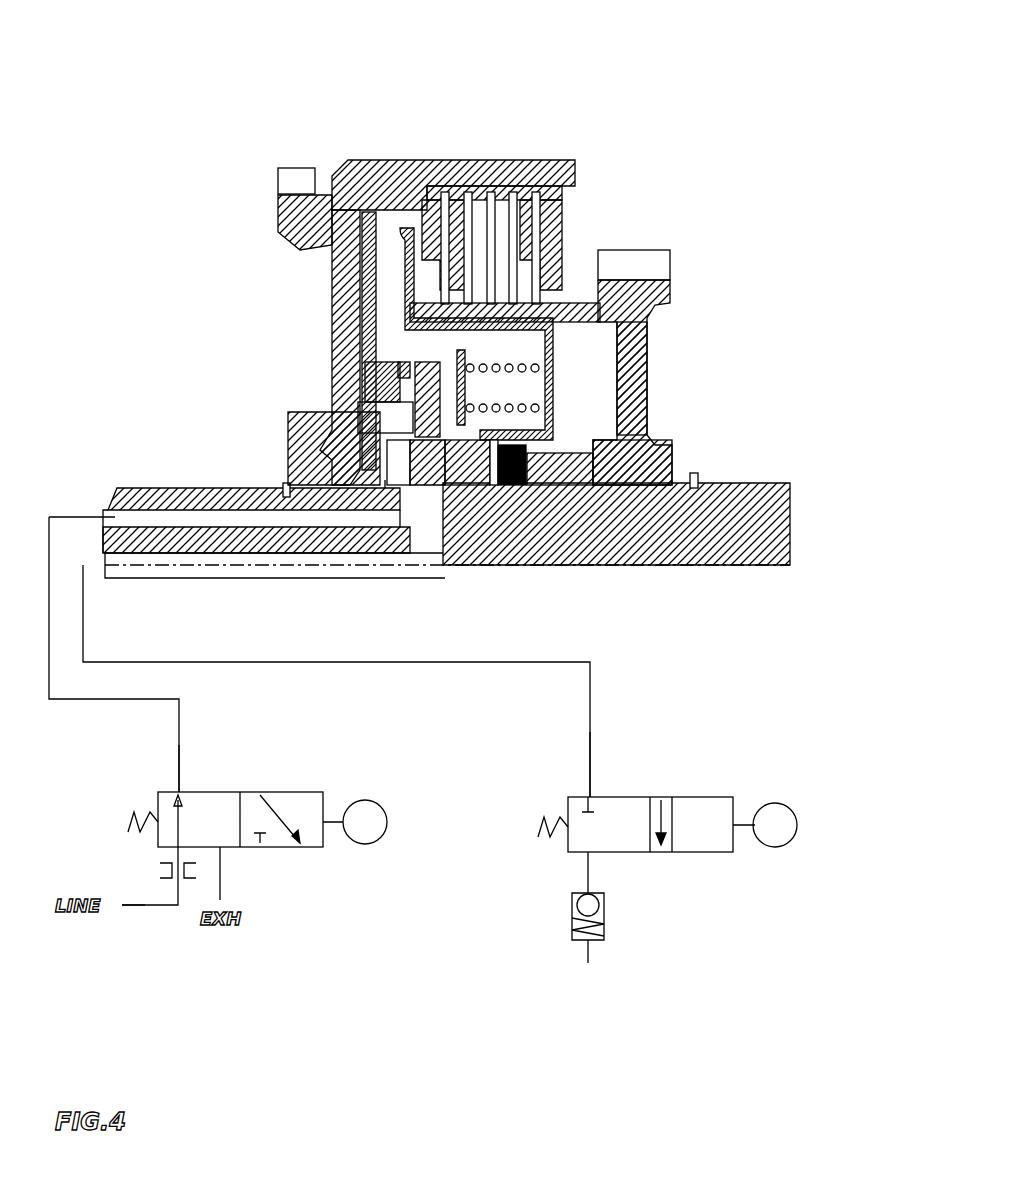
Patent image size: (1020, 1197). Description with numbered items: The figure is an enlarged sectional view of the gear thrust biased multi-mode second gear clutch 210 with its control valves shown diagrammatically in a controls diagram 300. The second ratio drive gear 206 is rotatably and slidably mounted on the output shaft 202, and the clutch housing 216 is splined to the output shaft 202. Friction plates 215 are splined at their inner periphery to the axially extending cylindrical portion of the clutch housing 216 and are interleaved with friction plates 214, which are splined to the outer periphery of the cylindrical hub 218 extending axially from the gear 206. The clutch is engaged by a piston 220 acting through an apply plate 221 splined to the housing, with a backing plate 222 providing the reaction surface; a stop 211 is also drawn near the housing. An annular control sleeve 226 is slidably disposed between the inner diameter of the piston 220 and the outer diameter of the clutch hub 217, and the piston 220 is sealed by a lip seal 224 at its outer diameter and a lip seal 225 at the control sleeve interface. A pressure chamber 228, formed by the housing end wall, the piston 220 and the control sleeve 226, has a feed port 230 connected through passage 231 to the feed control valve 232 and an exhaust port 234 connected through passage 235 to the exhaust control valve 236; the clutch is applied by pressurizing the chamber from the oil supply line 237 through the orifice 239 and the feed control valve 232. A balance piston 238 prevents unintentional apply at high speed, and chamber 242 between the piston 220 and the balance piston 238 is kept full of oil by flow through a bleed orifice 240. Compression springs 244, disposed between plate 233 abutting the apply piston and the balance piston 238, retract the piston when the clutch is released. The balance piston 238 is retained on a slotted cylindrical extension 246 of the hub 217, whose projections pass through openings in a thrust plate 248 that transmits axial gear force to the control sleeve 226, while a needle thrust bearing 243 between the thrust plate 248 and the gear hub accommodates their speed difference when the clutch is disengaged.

The output shaft 202 is at (167, 500).
The second ratio drive gear 206 is at (660, 302).
The second gear clutch 210 is at (712, 100).
The stop block 211 is at (297, 182).
The friction plates 214 is at (540, 185).
The friction plates 215 is at (500, 190).
The clutch housing 216 is at (470, 190).
The clutch hub 217 is at (455, 485).
The cylindrical hub 218 is at (640, 332).
The piston 220 is at (278, 190).
The apply plate 221 is at (440, 190).
The backing plate 222 is at (575, 292).
The lip seal 224 is at (382, 165).
The lip seal 225 is at (372, 396).
The control sleeve 226 is at (345, 378).
The pressure chamber 228 is at (370, 422).
The feed port 230 is at (358, 418).
The passage 231 is at (180, 745).
The feed control valve 232 is at (288, 868).
The plate 233 is at (502, 388).
The exhaust port 234 is at (427, 463).
The passage 235 is at (590, 732).
The exhaust control valve 236 is at (676, 868).
The oil supply line 237 is at (145, 908).
The balance piston 238 is at (345, 282).
The orifice 239 is at (155, 872).
The bleed orifice 240 is at (365, 248).
The chamber 242 is at (400, 320).
The needle thrust bearing 243 is at (512, 485).
The compression springs 244 is at (520, 370).
The slotted cylindrical extension 246 is at (545, 485).
The thrust plate 248 is at (480, 485).
The controls diagram 300 is at (765, 728).